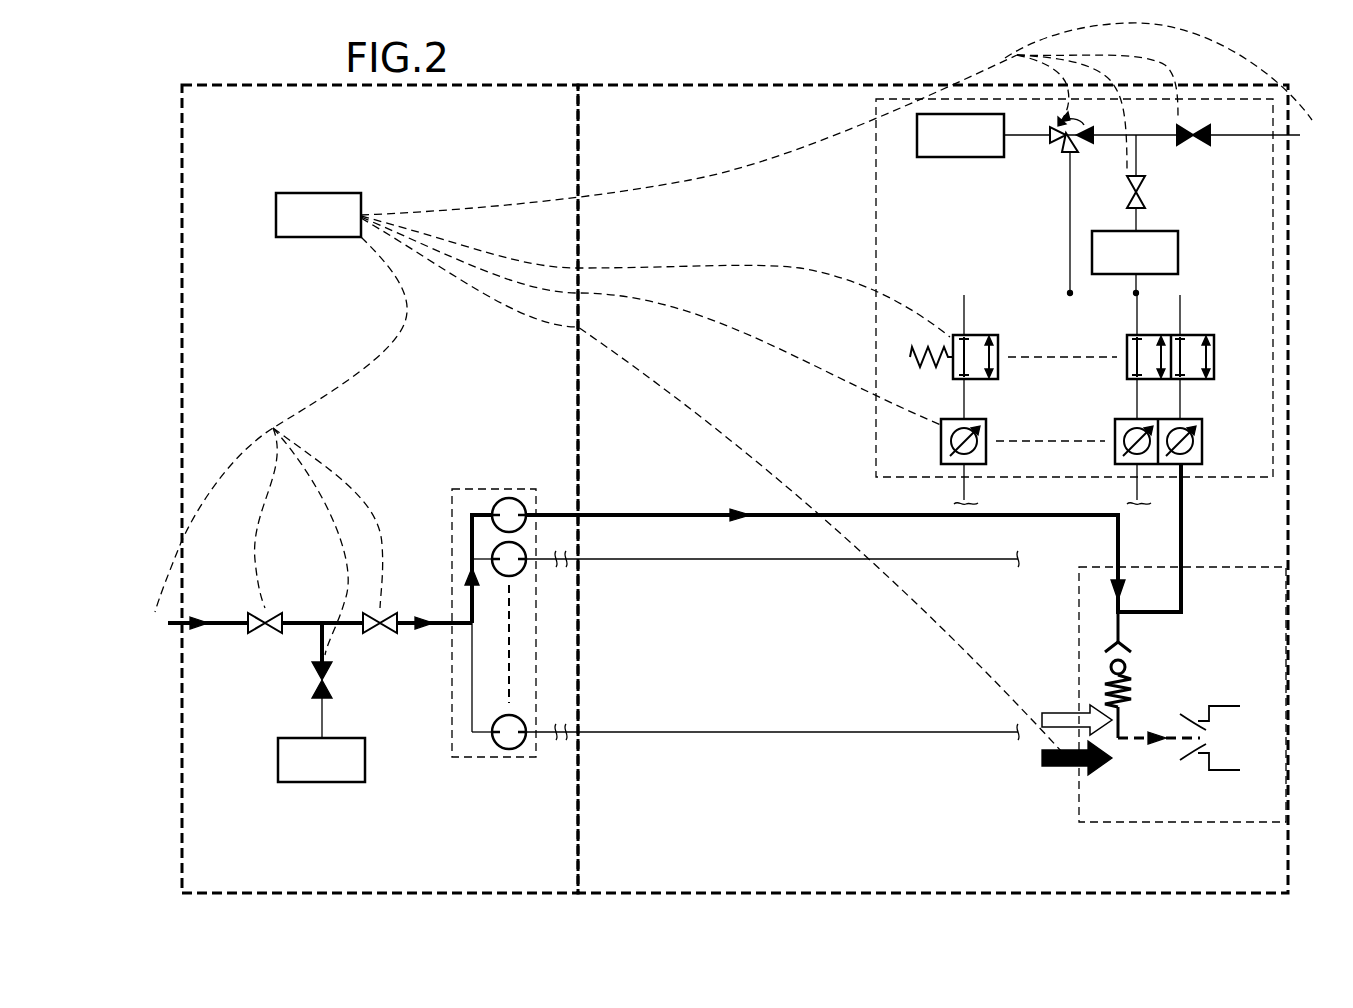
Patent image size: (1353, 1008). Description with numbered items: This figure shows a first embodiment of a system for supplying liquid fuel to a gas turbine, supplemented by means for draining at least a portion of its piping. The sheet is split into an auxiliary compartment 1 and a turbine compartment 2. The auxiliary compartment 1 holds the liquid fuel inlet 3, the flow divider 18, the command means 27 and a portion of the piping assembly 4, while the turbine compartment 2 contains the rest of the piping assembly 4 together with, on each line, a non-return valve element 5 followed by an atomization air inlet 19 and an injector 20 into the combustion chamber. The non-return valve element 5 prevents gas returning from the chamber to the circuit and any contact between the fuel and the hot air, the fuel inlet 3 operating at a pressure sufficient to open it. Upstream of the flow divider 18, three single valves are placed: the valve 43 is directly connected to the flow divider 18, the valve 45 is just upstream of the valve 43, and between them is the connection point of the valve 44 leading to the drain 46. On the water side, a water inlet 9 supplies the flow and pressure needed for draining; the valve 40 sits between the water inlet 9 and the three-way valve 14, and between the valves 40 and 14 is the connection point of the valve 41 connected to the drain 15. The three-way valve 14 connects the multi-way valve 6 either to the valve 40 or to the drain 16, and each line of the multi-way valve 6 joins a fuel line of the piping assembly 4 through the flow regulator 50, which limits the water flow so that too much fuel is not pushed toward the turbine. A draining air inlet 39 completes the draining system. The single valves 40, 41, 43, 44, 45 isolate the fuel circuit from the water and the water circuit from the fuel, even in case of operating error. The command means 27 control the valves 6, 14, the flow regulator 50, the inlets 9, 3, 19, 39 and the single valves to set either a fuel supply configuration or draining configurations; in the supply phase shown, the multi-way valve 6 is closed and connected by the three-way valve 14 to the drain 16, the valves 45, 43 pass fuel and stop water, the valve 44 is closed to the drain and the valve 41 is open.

The auxiliary compartment 1 is at (200, 889).
The turbine compartment 2 is at (596, 889).
The liquid fuel inlet 3 is at (199, 624).
The piping assembly 4 is at (860, 500).
The non-return valve element 5 is at (1135, 690).
The multi-way valve 6 is at (1214, 336).
The water inlet 9 is at (1161, 135).
The three-way valve 14 is at (1100, 150).
The drain 15 is at (1180, 250).
The drain 16 is at (935, 160).
The flow divider 18 is at (495, 757).
The atomization air inlet 19 is at (1057, 770).
The injector 20 is at (1205, 788).
The command means 27 is at (318, 237).
The draining air inlet 39 is at (1052, 710).
The single valve 40 is at (1192, 122).
The single valve 41 is at (1147, 193).
The single valve 43 is at (382, 633).
The single valve 44 is at (312, 687).
The single valve 45 is at (268, 633).
The drain 46 is at (322, 782).
The flow regulator 50 is at (1202, 443).